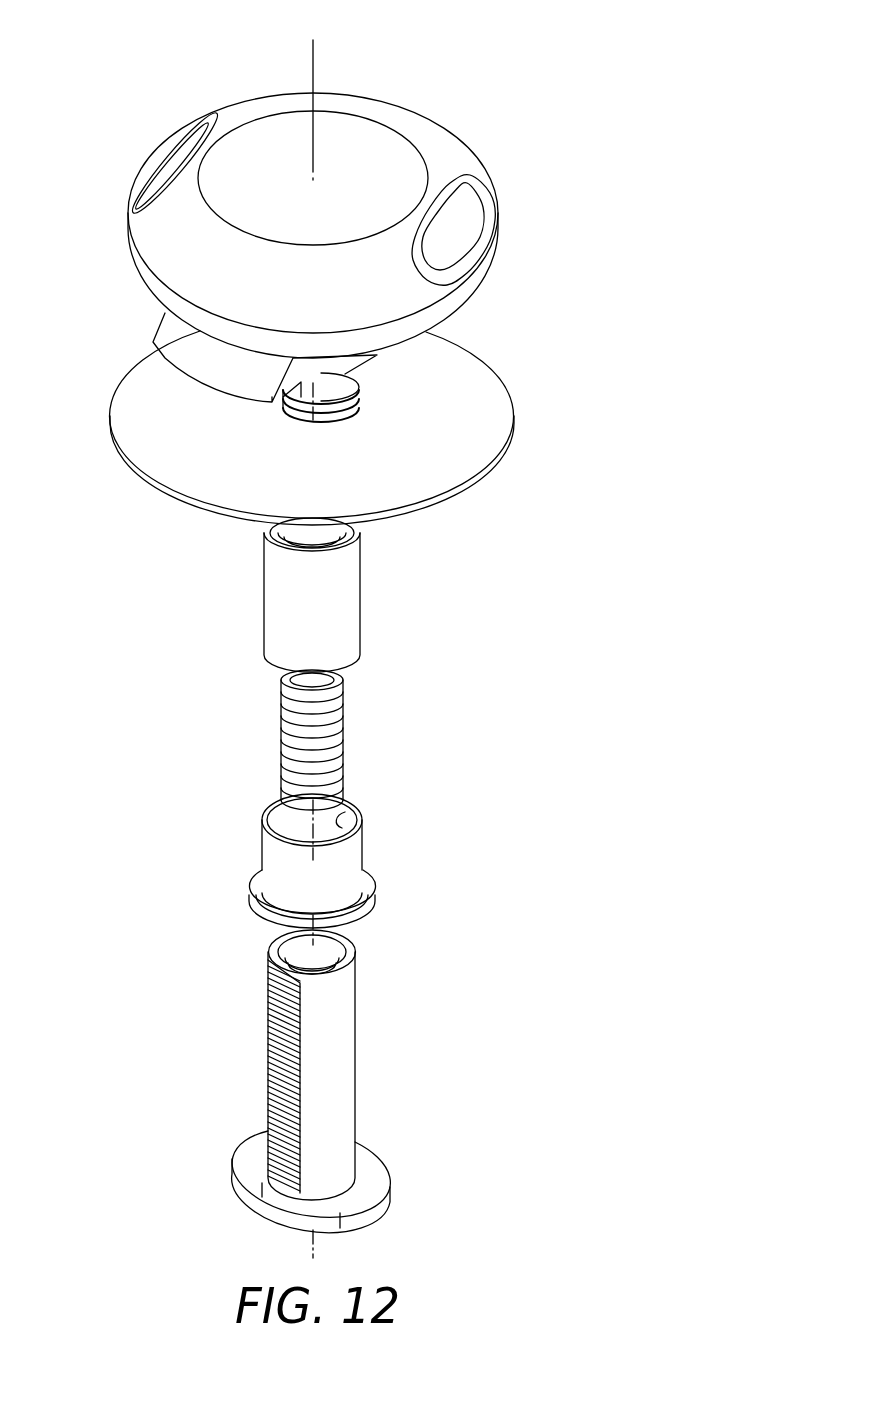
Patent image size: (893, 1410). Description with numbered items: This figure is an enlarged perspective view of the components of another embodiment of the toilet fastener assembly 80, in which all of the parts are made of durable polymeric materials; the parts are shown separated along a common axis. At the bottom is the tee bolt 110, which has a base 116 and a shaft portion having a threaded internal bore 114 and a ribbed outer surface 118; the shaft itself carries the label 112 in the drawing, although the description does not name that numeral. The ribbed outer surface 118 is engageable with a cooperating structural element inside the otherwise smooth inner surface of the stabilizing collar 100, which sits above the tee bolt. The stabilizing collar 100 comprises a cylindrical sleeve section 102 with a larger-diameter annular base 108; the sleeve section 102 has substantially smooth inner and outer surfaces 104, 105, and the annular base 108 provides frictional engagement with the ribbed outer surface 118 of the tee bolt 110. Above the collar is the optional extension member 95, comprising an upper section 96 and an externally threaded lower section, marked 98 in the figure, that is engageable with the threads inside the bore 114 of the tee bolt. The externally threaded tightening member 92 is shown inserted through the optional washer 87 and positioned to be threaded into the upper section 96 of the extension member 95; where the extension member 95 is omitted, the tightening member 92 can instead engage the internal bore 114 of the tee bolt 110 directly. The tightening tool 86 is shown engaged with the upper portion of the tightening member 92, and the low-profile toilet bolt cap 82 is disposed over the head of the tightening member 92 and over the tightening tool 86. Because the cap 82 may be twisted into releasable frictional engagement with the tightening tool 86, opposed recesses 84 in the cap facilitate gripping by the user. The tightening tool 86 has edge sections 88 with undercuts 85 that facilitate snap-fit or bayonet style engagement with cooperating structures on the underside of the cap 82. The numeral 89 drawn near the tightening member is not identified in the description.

The toilet fastener assembly 80 is at (440, 66).
The low-profile toilet bolt cap 82 is at (252, 108).
The opposed recesses 84 is at (168, 160).
The undercuts 85 is at (301, 418).
The tightening tool 86 is at (182, 360).
The washer 87 is at (208, 477).
The edge sections 88 is at (217, 393).
The threaded stud 89 is at (363, 397).
The externally threaded tightening member 92 is at (337, 418).
The extension member 95 is at (260, 648).
The upper section 96 is at (338, 595).
The threaded shank 98 is at (285, 748).
The stabilizing collar 100 is at (365, 852).
The cylindrical sleeve section 102 is at (267, 813).
The inner surface 104 is at (270, 850).
The outer surface 105 is at (337, 815).
The annular base 108 is at (270, 915).
The tee bolt 110 is at (357, 1047).
The bolt tube 112 is at (337, 1087).
The threaded internal bore 114 is at (327, 943).
The base 116 is at (383, 1193).
The ribbed outer surface 118 is at (270, 1085).